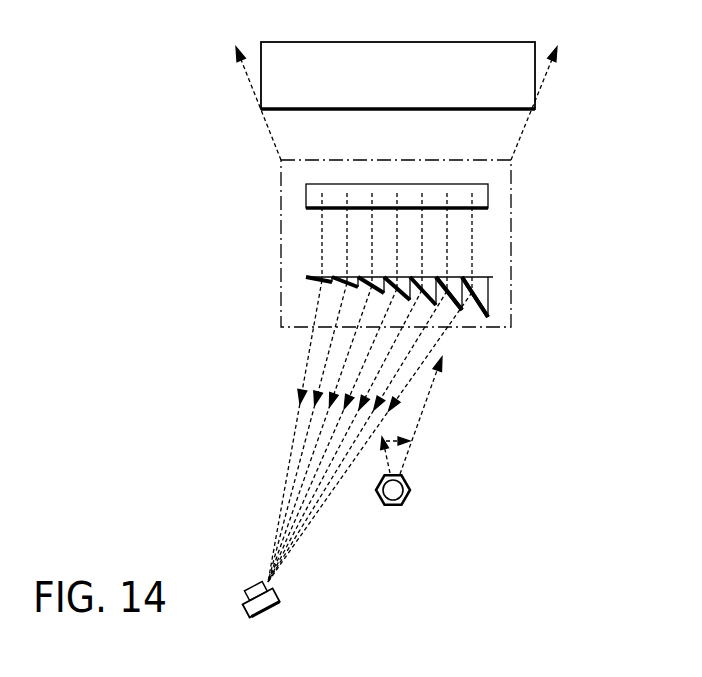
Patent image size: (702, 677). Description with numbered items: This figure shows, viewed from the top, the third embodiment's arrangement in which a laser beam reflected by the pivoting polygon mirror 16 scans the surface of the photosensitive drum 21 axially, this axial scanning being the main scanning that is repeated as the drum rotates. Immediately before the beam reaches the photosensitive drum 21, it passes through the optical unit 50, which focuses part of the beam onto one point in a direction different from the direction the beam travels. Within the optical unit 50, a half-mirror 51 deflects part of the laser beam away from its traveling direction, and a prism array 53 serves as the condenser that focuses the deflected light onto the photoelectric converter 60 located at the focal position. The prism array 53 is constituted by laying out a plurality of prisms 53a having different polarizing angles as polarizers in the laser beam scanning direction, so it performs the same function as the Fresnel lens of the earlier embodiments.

The photosensitive drum 21 is at (454, 110).
The optical unit 50 is at (281, 228).
The half-mirror 51 is at (489, 196).
The prism array 53 is at (492, 271).
The prisms 53a is at (443, 300).
The polygon mirror 16 is at (410, 490).
The photoelectric converter 60 is at (247, 596).